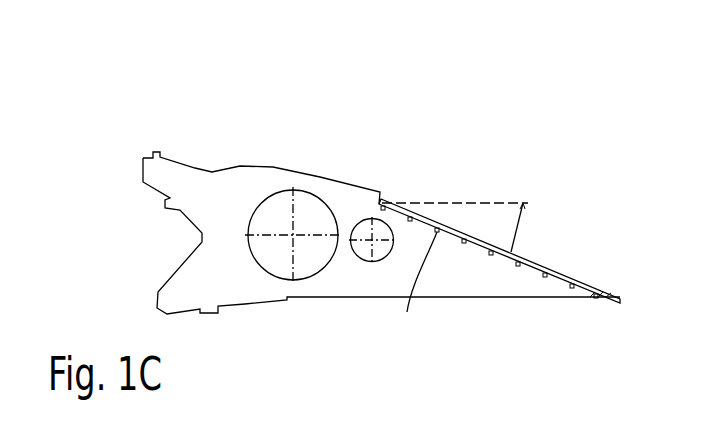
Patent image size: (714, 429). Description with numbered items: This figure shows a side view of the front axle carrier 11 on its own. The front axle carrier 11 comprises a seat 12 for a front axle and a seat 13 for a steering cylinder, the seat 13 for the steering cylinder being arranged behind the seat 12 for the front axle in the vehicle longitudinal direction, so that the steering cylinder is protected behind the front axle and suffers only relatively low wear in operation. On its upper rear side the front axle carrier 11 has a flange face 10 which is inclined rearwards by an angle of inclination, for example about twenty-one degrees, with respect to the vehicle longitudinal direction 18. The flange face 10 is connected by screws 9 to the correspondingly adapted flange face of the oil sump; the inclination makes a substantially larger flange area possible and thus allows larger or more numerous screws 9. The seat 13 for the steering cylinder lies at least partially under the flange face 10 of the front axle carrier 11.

The screws 9 is at (417, 288).
The flange face 10 is at (538, 262).
The front axle carrier 11 is at (227, 190).
The seat for a front axle 12 is at (318, 200).
The seat for a steering cylinder 13 is at (363, 249).
The vehicle longitudinal direction 18 is at (467, 200).